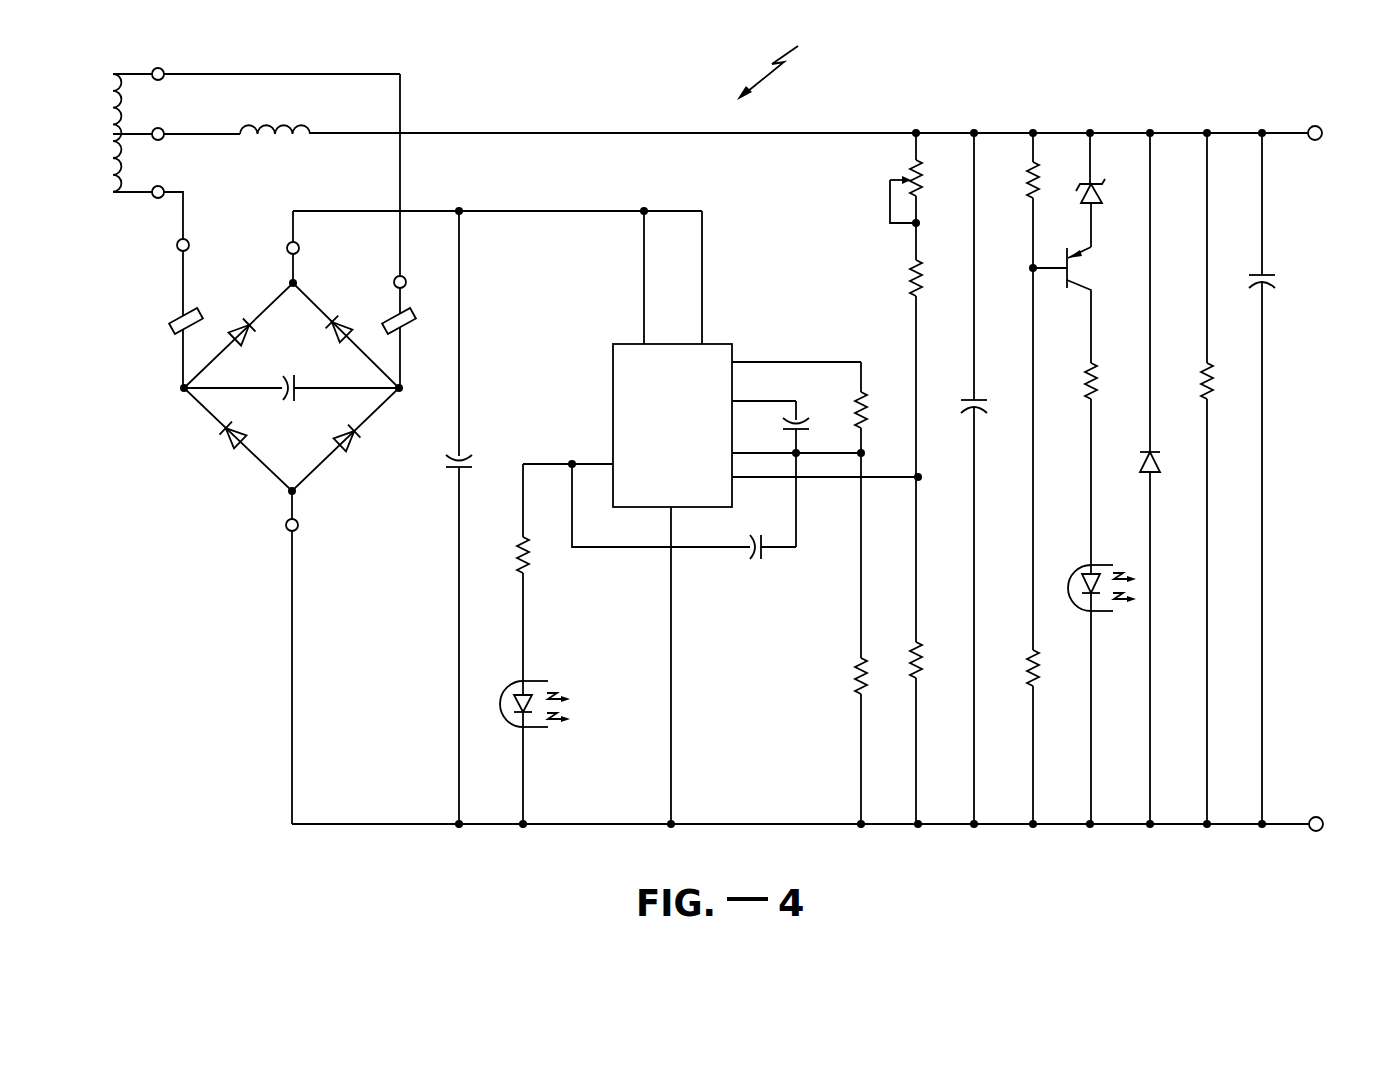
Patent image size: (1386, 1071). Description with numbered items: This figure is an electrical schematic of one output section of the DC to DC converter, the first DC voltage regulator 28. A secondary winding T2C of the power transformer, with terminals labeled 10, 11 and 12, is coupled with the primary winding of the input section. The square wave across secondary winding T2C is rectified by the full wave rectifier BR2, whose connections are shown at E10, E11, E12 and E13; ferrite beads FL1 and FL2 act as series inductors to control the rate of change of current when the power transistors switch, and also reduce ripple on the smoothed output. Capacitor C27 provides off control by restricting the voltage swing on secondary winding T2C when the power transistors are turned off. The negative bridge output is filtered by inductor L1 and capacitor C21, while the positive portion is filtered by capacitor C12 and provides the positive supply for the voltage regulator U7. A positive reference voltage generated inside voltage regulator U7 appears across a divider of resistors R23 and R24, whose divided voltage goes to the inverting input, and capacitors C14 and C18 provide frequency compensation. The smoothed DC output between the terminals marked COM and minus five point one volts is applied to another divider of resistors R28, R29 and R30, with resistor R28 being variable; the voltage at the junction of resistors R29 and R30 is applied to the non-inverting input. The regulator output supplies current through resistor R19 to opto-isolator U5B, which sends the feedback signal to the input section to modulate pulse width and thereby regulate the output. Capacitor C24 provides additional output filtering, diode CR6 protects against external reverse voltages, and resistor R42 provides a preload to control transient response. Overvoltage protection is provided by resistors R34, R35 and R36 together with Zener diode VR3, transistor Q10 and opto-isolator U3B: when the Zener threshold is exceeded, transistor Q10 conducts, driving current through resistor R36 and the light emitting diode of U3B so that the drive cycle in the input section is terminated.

The first DC voltage regulator 28 is at (783, 67).
The secondary winding T2C is at (98, 133).
The transformer terminal 10 is at (158, 63).
The transformer terminal 11 is at (195, 121).
The transformer terminal 12 is at (165, 202).
The inductor L1 is at (275, 145).
The terminal E10 is at (202, 246).
The terminal E11 is at (312, 247).
The terminal E12 is at (311, 657).
The terminal E13 is at (418, 231).
The ferrite bead FL1 is at (162, 319).
The ferrite bead FL2 is at (409, 326).
The full wave rectifier BR2 is at (291, 385).
The capacitor C27 is at (291, 373).
The capacitor C12 is at (472, 517).
The voltage regulator U7 is at (665, 517).
The capacitor C18 is at (809, 474).
The capacitor C14 is at (684, 525).
The resistor R19 is at (544, 572).
The opto-isolator U5B is at (535, 742).
The resistor R23 is at (878, 407).
The resistor R24 is at (878, 638).
The resistor R28 is at (923, 196).
The resistor R29 is at (933, 450).
The resistor R30 is at (933, 733).
The capacitor C21 is at (987, 478).
The resistor R34 is at (1050, 391).
The resistor R35 is at (1050, 737).
The Zener diode VR3 is at (1103, 190).
The transistor Q10 is at (1072, 305).
The resistor R36 is at (1108, 464).
The opto-isolator U3B is at (1102, 685).
The diode CR6 is at (1164, 478).
The resistor R42 is at (1224, 478).
The capacitor C24 is at (1276, 478).
The common terminal COM is at (1321, 133).